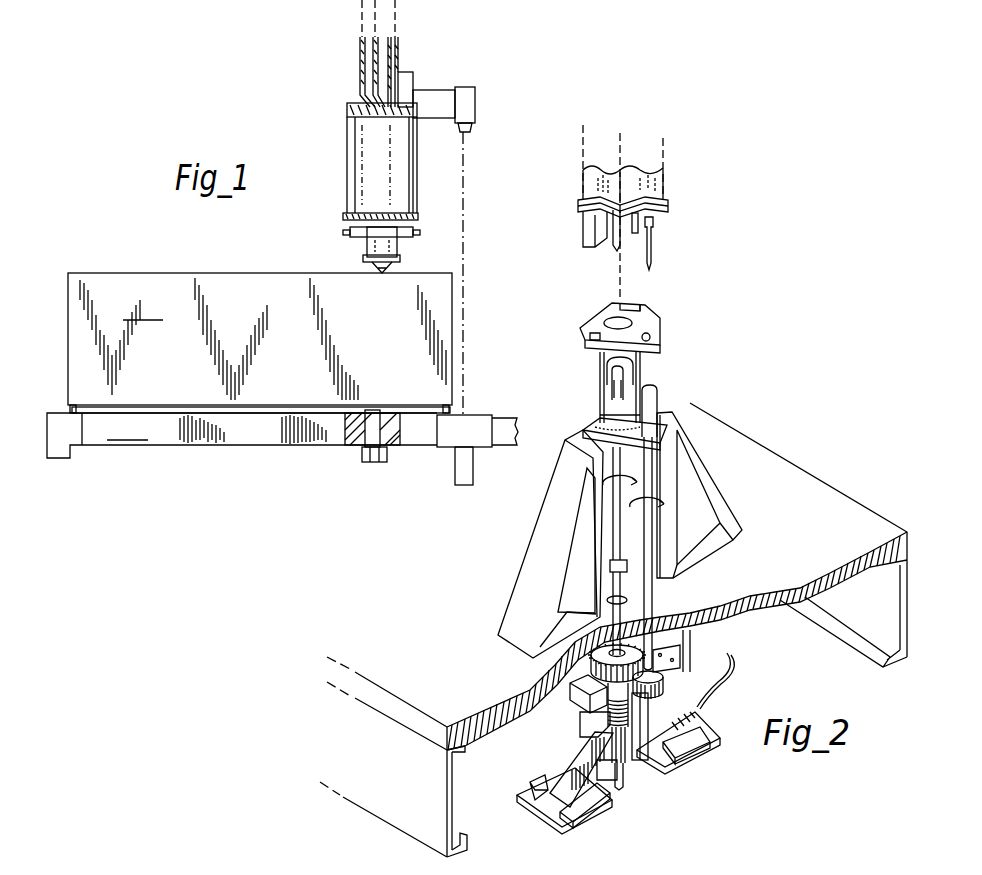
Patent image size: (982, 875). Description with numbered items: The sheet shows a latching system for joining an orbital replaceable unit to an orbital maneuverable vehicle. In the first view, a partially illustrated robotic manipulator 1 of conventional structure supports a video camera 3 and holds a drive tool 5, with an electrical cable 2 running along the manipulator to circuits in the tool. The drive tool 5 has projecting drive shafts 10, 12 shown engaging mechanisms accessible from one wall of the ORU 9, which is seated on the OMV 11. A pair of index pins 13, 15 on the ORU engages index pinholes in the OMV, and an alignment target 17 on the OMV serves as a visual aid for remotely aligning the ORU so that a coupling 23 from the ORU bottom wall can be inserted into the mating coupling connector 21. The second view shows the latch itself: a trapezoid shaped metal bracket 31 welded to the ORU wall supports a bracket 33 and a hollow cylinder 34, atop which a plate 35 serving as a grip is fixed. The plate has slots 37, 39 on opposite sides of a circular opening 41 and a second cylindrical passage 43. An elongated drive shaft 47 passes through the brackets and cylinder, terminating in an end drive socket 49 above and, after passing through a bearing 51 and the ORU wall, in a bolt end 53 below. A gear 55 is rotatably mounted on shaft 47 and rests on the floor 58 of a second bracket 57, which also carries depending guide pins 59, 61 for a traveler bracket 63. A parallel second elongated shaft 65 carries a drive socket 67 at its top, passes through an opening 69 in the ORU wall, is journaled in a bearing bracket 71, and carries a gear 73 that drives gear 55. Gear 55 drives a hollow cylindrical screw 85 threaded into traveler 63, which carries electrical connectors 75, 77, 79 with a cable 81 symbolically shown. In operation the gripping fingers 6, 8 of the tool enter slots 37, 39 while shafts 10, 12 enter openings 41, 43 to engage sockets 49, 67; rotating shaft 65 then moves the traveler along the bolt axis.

In FIG. 1, the robotic manipulator 1 is at (338, 167).
In FIG. 1, the electrical cable 2 is at (367, 68).
In FIG. 1, the video camera 3 is at (477, 103).
In FIG. 1, the drive tool 5 is at (356, 250).
In FIG. 2, the drive tool 5 is at (582, 188).
In FIG. 2, the gripping finger 6 is at (583, 235).
In FIG. 2, the gripping finger 8 is at (635, 227).
In FIG. 1, the orbital replaceable unit 9 is at (172, 272).
In FIG. 2, the orbital replaceable unit 9 is at (798, 456).
In FIG. 1, the socket drive shaft 10 is at (372, 268).
In FIG. 2, the socket drive shaft 10 is at (616, 249).
In FIG. 1, the orbital maneuverable vehicle 11 is at (220, 447).
In FIG. 1, the drive shaft 12 is at (390, 267).
In FIG. 2, the drive shaft 12 is at (652, 255).
In FIG. 1, the index pin 13 is at (72, 410).
In FIG. 1, the index pin 15 is at (445, 413).
In FIG. 1, the alignment target 17 is at (474, 418).
In FIG. 1, the mating coupling connector 21 is at (360, 452).
In FIG. 1, the coupling 23 is at (373, 407).
In FIG. 2, the metal bracket 31 is at (528, 560).
In FIG. 2, the bracket 33 is at (595, 427).
In FIG. 2, the hollow cylinder 34 is at (605, 372).
In FIG. 2, the plate 35 is at (590, 323).
In FIG. 2, the slot 37 is at (593, 342).
In FIG. 2, the slot 39 is at (637, 312).
In FIG. 2, the circular opening 41 is at (612, 308).
In FIG. 2, the second cylindrical passage 43 is at (653, 337).
In FIG. 2, the elongated drive shaft 47 is at (613, 465).
In FIG. 2, the end drive socket 49 is at (628, 380).
In FIG. 2, the bearing 51 is at (603, 587).
In FIG. 2, the bolt end 53 is at (622, 782).
In FIG. 2, the gear 55 is at (590, 667).
In FIG. 2, the second bracket 57 is at (693, 650).
In FIG. 2, the floor 58 is at (580, 683).
In FIG. 2, the guide pin 59 is at (590, 718).
In FIG. 2, the guide pin 61 is at (655, 726).
In FIG. 2, the traveler bracket 63 is at (568, 753).
In FIG. 2, the second elongated shaft 65 is at (673, 552).
In FIG. 2, the drive socket 67 is at (658, 395).
In FIG. 2, the opening 69 is at (653, 603).
In FIG. 2, the bearing bracket 71 is at (667, 685).
In FIG. 2, the gear 73 is at (693, 708).
In FIG. 2, the electrical connector 75 is at (542, 777).
In FIG. 2, the electrical connector 77 is at (594, 800).
In FIG. 2, the electrical connector 79 is at (677, 747).
In FIG. 2, the cable 81 is at (719, 677).
In FIG. 2, the hollow cylindrical screw 85 is at (628, 762).